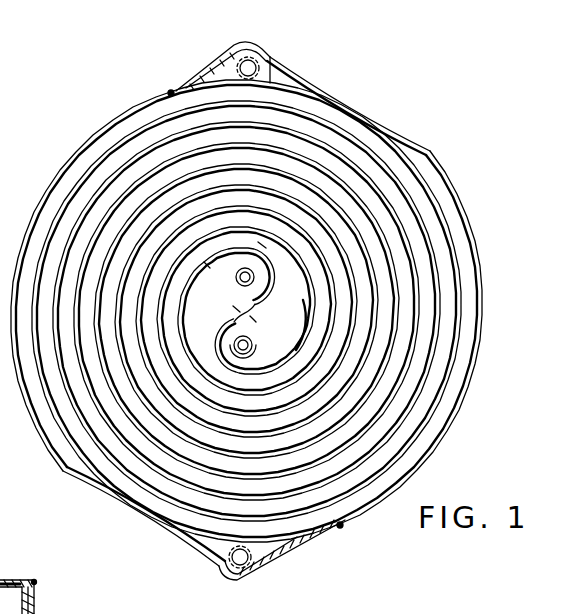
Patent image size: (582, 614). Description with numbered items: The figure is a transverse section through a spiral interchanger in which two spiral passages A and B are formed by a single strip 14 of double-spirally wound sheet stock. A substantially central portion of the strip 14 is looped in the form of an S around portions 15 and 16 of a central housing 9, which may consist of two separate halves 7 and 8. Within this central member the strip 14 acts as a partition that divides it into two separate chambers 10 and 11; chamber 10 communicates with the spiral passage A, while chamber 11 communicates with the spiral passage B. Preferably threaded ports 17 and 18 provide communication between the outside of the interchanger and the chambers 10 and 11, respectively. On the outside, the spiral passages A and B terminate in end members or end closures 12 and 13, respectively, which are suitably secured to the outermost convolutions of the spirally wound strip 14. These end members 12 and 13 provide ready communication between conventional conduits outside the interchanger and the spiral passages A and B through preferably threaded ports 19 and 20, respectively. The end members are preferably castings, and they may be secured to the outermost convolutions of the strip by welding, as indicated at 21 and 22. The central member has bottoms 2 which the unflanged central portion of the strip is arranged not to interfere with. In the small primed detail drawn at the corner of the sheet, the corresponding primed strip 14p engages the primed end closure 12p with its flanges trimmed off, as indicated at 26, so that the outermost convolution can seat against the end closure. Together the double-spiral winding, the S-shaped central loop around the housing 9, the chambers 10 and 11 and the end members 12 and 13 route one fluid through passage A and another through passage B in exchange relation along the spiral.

The bottom of central member 2 is at (222, 22).
The half of central housing 7 is at (204, 270).
The half of central housing 8 is at (304, 328).
The central housing 9 is at (264, 250).
The chamber 10 is at (218, 310).
The chamber 11 is at (294, 308).
The end member 12 is at (214, 62).
The end member 13 is at (300, 553).
The strip 14 is at (480, 262).
The portion of central housing 15 is at (232, 311).
The portion of central housing 16 is at (253, 321).
The threaded port 17 is at (236, 281).
The threaded port 18 is at (254, 350).
The threaded port 19 is at (226, 568).
The threaded port 20 is at (272, 60).
The weld 21 is at (165, 90).
The weld 22 is at (341, 530).
The trimmed flange location 26 is at (38, 580).
The strip 14p is at (4, 576).
The end closure 12p is at (36, 595).
The spiral passage A is at (234, 311).
The spiral passage B is at (255, 311).